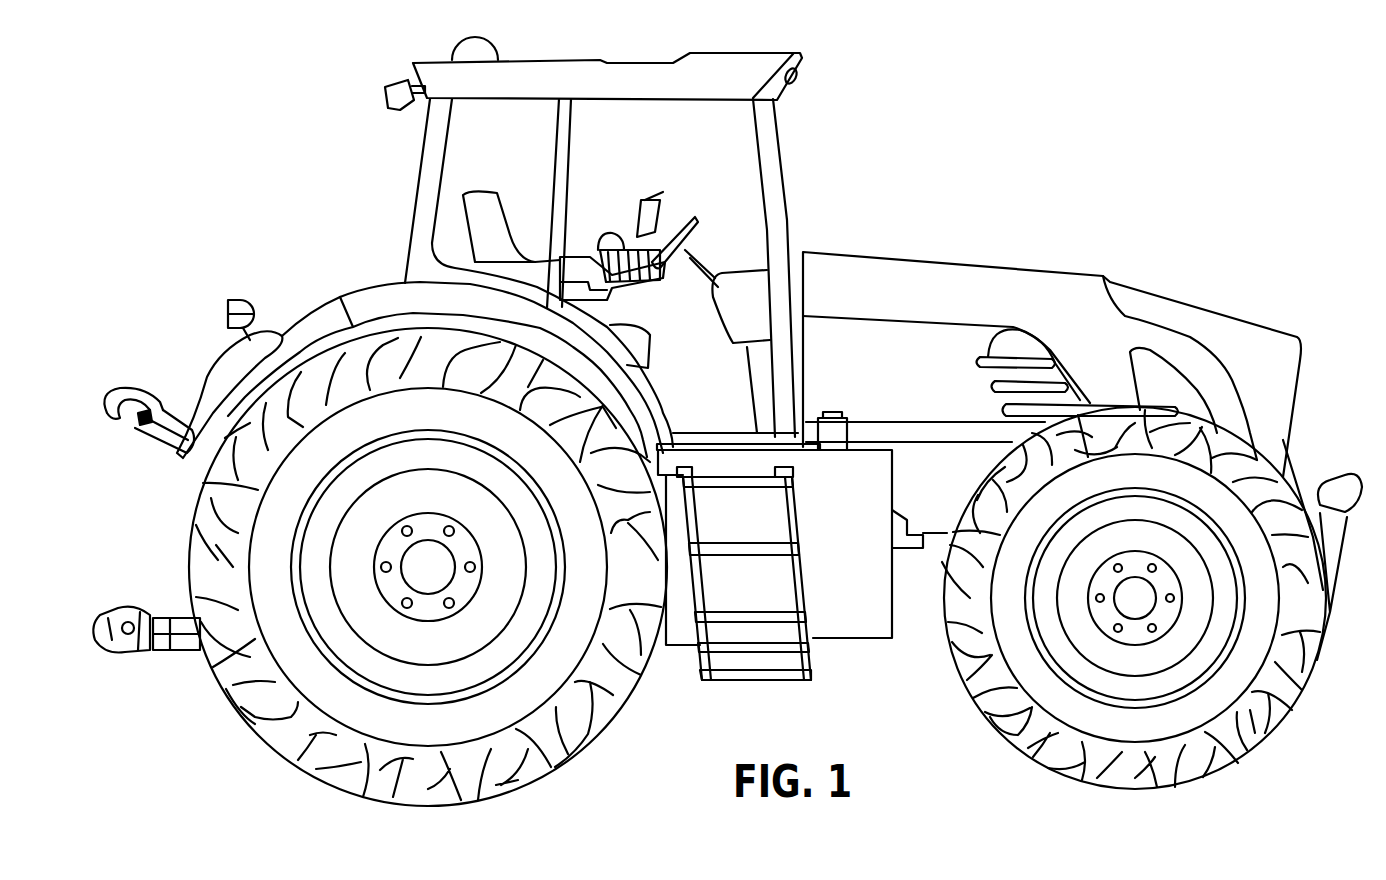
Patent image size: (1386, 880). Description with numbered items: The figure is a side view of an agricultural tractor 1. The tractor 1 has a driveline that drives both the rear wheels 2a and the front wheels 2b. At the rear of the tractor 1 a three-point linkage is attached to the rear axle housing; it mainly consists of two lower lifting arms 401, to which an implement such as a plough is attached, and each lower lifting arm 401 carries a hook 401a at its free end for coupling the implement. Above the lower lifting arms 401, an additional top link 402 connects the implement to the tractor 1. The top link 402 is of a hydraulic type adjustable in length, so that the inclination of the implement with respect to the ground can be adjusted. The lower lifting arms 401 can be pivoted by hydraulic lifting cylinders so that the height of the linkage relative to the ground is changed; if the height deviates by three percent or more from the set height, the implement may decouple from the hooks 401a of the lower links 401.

The agricultural tractor 1 is at (219, 196).
The rear wheels 2a is at (250, 705).
The front wheels 2b is at (1252, 732).
The lower lifting arms 401 is at (163, 660).
The hooks 401a is at (123, 607).
The top link 402 is at (153, 397).